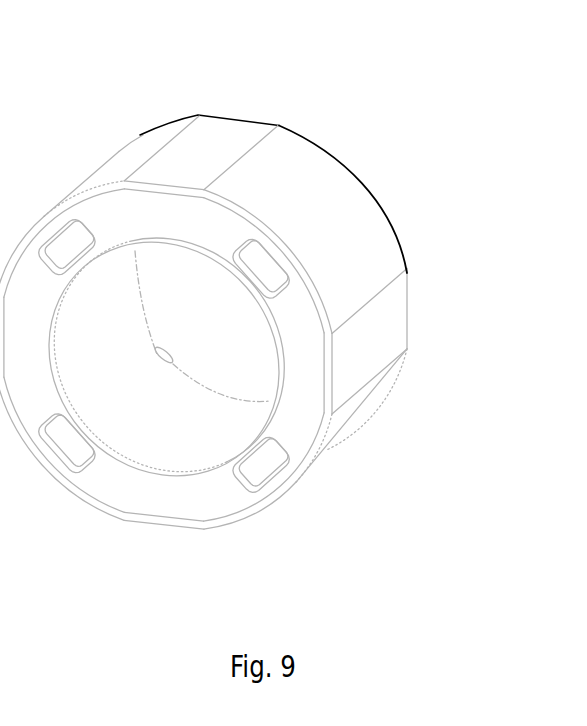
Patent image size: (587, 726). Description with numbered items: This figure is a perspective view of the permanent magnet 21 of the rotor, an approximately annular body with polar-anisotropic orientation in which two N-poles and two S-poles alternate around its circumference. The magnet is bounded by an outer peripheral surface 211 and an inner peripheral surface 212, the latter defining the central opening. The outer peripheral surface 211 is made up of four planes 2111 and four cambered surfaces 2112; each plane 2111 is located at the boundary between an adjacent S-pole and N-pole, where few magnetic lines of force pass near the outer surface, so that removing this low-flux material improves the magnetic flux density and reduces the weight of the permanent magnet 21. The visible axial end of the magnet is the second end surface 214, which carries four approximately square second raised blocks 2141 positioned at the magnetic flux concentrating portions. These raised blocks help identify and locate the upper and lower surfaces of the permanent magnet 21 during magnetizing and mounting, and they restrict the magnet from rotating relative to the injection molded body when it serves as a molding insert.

The permanent magnet 21 is at (110, 61).
The outer peripheral surface 211 is at (386, 308).
The plane 2111 is at (208, 150).
The cambered surface 2112 is at (316, 210).
The inner peripheral surface 212 is at (142, 400).
The second end surface 214 is at (300, 380).
The second raised block 2141 is at (260, 473).